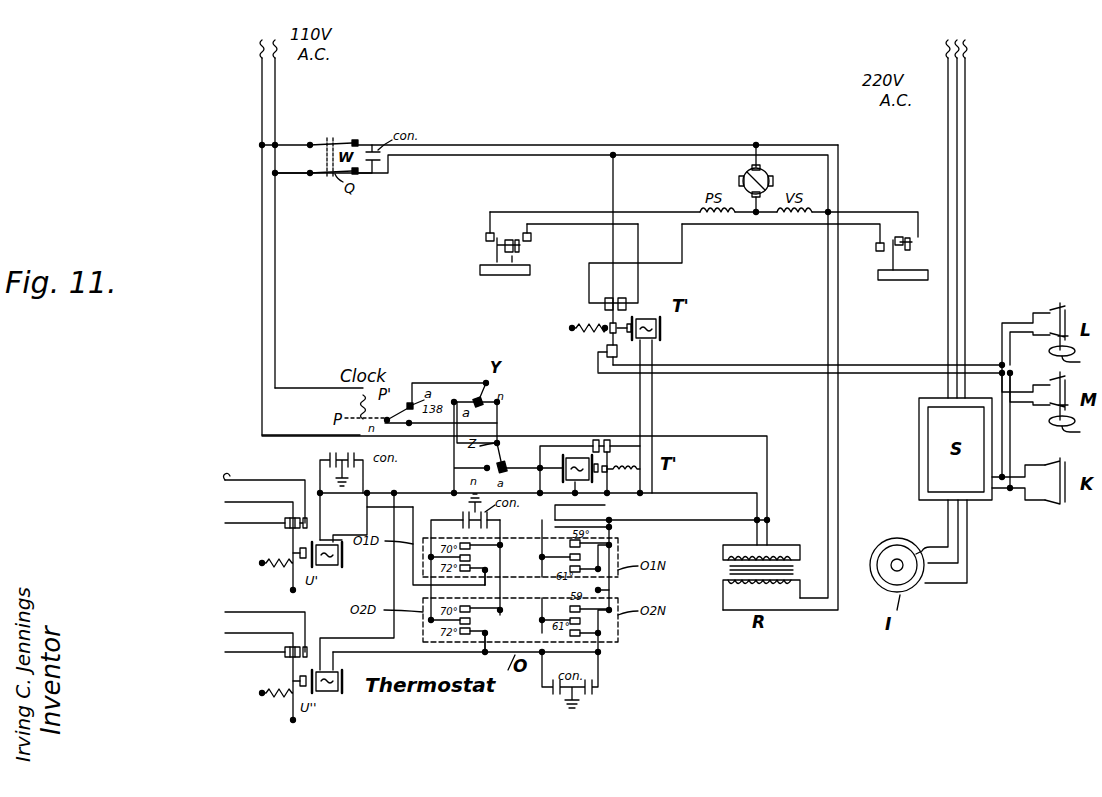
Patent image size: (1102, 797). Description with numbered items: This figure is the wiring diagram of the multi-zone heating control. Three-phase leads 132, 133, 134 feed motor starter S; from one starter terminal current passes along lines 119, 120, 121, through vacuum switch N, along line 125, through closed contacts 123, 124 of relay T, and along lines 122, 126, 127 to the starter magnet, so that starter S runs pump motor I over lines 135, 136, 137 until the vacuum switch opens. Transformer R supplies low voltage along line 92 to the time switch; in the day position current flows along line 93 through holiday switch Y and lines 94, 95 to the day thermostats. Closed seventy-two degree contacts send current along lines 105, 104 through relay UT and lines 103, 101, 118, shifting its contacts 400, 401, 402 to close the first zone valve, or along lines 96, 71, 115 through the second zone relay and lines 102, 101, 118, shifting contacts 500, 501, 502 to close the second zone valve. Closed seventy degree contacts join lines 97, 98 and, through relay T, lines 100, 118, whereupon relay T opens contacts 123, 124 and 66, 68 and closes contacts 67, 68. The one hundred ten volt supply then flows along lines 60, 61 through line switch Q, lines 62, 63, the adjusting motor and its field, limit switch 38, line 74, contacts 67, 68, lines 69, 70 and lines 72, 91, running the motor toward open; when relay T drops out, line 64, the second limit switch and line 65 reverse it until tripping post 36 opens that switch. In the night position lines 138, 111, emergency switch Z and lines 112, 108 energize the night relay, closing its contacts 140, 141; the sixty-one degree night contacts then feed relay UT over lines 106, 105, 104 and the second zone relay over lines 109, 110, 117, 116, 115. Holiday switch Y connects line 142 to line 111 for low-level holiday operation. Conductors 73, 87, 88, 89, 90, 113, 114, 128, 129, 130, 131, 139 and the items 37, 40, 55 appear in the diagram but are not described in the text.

The tripping post 36 is at (905, 282).
The motor 37 is at (742, 183).
The limit switch 38 is at (482, 246).
The relay base 40 is at (500, 278).
The switch 55 is at (905, 210).
The line 60 is at (278, 60).
The line 61 is at (295, 146).
The line 62 is at (517, 145).
The line 63 is at (755, 144).
The line 64 is at (858, 212).
The line 65 is at (790, 225).
The relay T contact 66 is at (605, 305).
The relay T contact 67 is at (626, 298).
The relay T contact 68 is at (607, 298).
The line 69 is at (638, 244).
The line 70 is at (435, 156).
The line 71 is at (488, 640).
The line 72 is at (293, 173).
The wire 73 is at (613, 212).
The line 74 is at (605, 225).
The wire 87 is at (840, 165).
The wire 88 is at (692, 145).
The wire 89 is at (262, 205).
The wire 90 is at (275, 217).
The line 91 is at (261, 44).
The line 92 is at (742, 436).
The line 93 is at (474, 383).
The line 94 is at (452, 460).
The line 95 is at (434, 531).
The line 96 is at (411, 585).
The line 97 is at (500, 598).
The line 98 is at (500, 530).
The line 100 is at (726, 520).
The line 101 is at (437, 493).
The line 102 is at (392, 555).
The line 103 is at (368, 498).
The line 104 is at (372, 510).
The line 105 is at (412, 560).
The line 106 is at (600, 594).
The line 108 is at (653, 390).
The line 109 is at (595, 440).
The line 110 is at (580, 512).
The line 111 is at (499, 423).
The line 112 is at (530, 448).
The wire 113 is at (600, 590).
The wire 114 is at (600, 530).
The line 115 is at (440, 655).
The line 116 is at (487, 658).
The line 117 is at (603, 647).
The line 118 is at (757, 530).
The line 119 is at (1000, 490).
The line 120 is at (1040, 412).
The line 121 is at (1032, 386).
The line 122 is at (887, 373).
The relay T contact 123 is at (605, 352).
The relay T contact 124 is at (647, 340).
The line 125 is at (891, 365).
The line 126 is at (995, 380).
The line 127 is at (985, 473).
The wire 128 is at (1033, 316).
The wire 129 is at (1008, 335).
The wire 130 is at (1024, 500).
The wire 131 is at (1030, 462).
The supply lead 132 is at (943, 40).
The supply lead 133 is at (959, 40).
The supply lead 134 is at (966, 44).
The line 135 is at (948, 520).
The line 136 is at (942, 534).
The line 137 is at (970, 542).
The line 138 is at (490, 212).
The contact 139 is at (526, 215).
The relay T' contact 140 is at (595, 439).
The relay T' contact 141 is at (607, 440).
The line 142 is at (499, 403).
The relay UT contact 400 is at (287, 478).
The relay UT contact 401 is at (285, 500).
The relay UT contact 402 is at (283, 522).
The relay U'T contact 500 is at (287, 610).
The relay U'T contact 501 is at (285, 631).
The relay U'T contact 502 is at (283, 651).